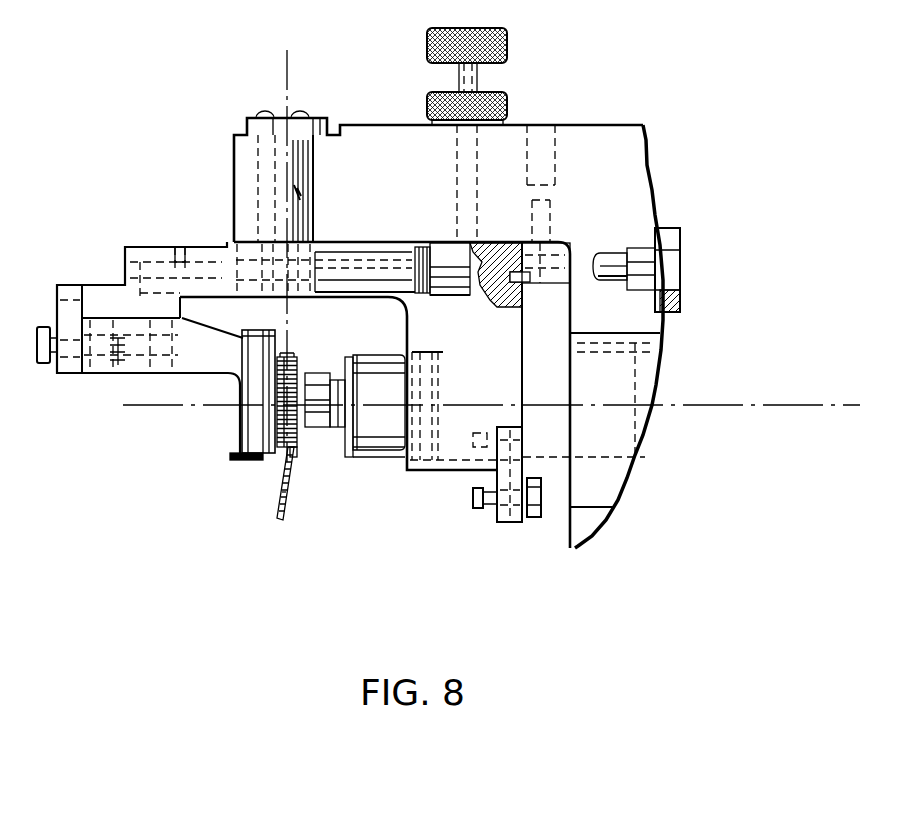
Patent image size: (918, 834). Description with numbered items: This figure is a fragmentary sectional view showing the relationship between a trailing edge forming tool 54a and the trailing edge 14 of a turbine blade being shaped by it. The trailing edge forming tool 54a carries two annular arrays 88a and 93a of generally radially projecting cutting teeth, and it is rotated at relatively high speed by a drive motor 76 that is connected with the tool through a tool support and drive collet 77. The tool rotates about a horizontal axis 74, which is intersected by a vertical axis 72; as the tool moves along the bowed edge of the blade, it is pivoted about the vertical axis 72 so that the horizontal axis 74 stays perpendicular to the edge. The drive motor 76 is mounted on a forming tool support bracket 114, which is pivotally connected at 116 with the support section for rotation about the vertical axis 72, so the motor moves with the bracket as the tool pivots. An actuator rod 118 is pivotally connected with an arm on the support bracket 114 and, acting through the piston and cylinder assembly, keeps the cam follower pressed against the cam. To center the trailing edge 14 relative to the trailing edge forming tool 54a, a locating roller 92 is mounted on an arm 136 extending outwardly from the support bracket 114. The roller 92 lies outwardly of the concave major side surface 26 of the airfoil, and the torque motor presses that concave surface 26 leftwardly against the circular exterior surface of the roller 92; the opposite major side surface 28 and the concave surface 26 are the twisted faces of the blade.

The vertical axis 72 is at (285, 82).
The pivotal connection 116 is at (298, 196).
The arm 136 is at (156, 252).
The actuator rod 118 is at (613, 258).
The trailing edge forming tool 54a is at (290, 353).
The tool support and drive collet 77 is at (330, 376).
The horizontal axis 74 is at (152, 406).
The annular array of cutting teeth 88a is at (280, 415).
The locating roller 92 is at (232, 458).
The trailing edge 14 is at (295, 437).
The annular array of cutting teeth 93a is at (294, 458).
The drive motor 76 is at (384, 447).
The concave major side surface 26 is at (282, 492).
The major side surface 28 is at (280, 519).
The forming tool support bracket 114 is at (478, 378).